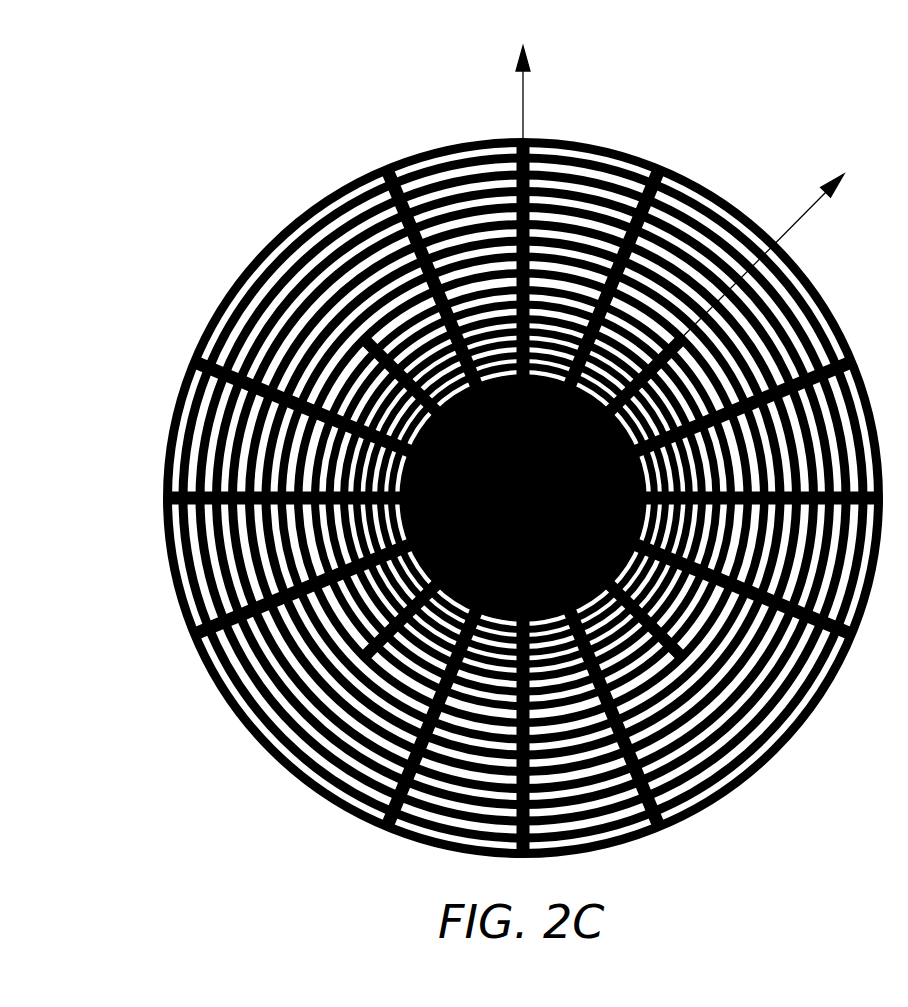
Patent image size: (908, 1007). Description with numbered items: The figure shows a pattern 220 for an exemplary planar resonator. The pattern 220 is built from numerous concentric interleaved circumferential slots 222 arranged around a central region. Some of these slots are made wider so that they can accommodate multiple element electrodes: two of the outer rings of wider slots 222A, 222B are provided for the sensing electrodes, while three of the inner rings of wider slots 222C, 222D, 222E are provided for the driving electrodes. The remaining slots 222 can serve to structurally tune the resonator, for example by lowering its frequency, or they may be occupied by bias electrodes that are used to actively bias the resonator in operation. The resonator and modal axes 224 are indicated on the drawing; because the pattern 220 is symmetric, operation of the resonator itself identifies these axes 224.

The pattern 220 is at (146, 68).
The concentric interleaved circumferential slots 222 is at (122, 474).
The wider slot for sensing electrodes 222A is at (443, 182).
The wider slot for sensing electrodes 222B is at (403, 160).
The wider slot for driving electrodes 222C is at (318, 402).
The wider slot for driving electrodes 222D is at (323, 432).
The wider slot for driving electrodes 222E is at (335, 457).
The resonator and modal axes 224 is at (818, 182).